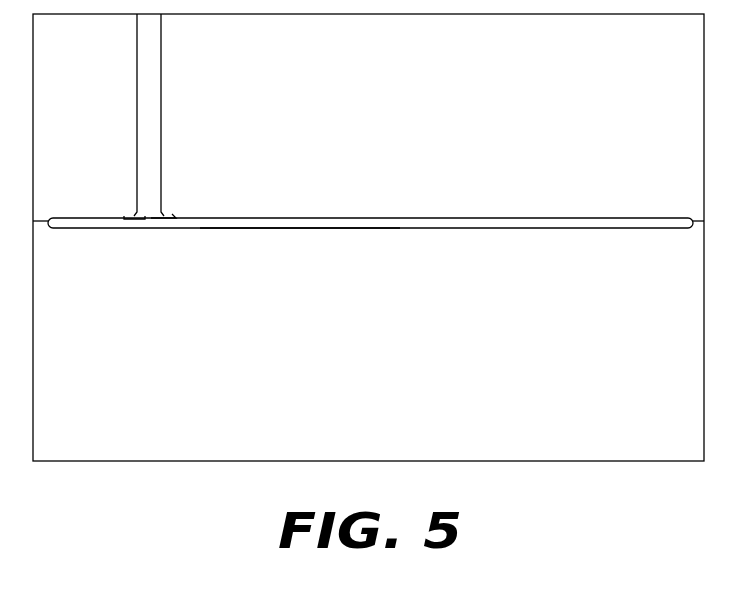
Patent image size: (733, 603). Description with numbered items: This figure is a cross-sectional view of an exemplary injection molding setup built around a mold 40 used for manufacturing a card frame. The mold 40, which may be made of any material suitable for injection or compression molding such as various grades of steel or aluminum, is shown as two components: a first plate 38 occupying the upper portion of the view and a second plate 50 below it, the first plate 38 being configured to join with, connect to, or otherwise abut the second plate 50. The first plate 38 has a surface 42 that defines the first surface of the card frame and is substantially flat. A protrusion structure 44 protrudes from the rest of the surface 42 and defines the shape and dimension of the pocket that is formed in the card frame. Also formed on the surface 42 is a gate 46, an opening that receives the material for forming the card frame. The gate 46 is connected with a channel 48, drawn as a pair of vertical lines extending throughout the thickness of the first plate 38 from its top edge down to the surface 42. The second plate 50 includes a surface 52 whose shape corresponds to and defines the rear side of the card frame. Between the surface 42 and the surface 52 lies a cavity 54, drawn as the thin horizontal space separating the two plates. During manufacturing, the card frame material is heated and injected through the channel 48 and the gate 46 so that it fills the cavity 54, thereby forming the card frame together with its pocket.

The first plate 38 is at (507, 118).
The mold 40 is at (85, 461).
The surface 42 is at (252, 218).
The protrusion structure 44 is at (126, 214).
The gate 46 is at (158, 228).
The channel 48 is at (152, 58).
The second plate 50 is at (568, 391).
The surface 52 is at (296, 230).
The cavity 54 is at (341, 222).